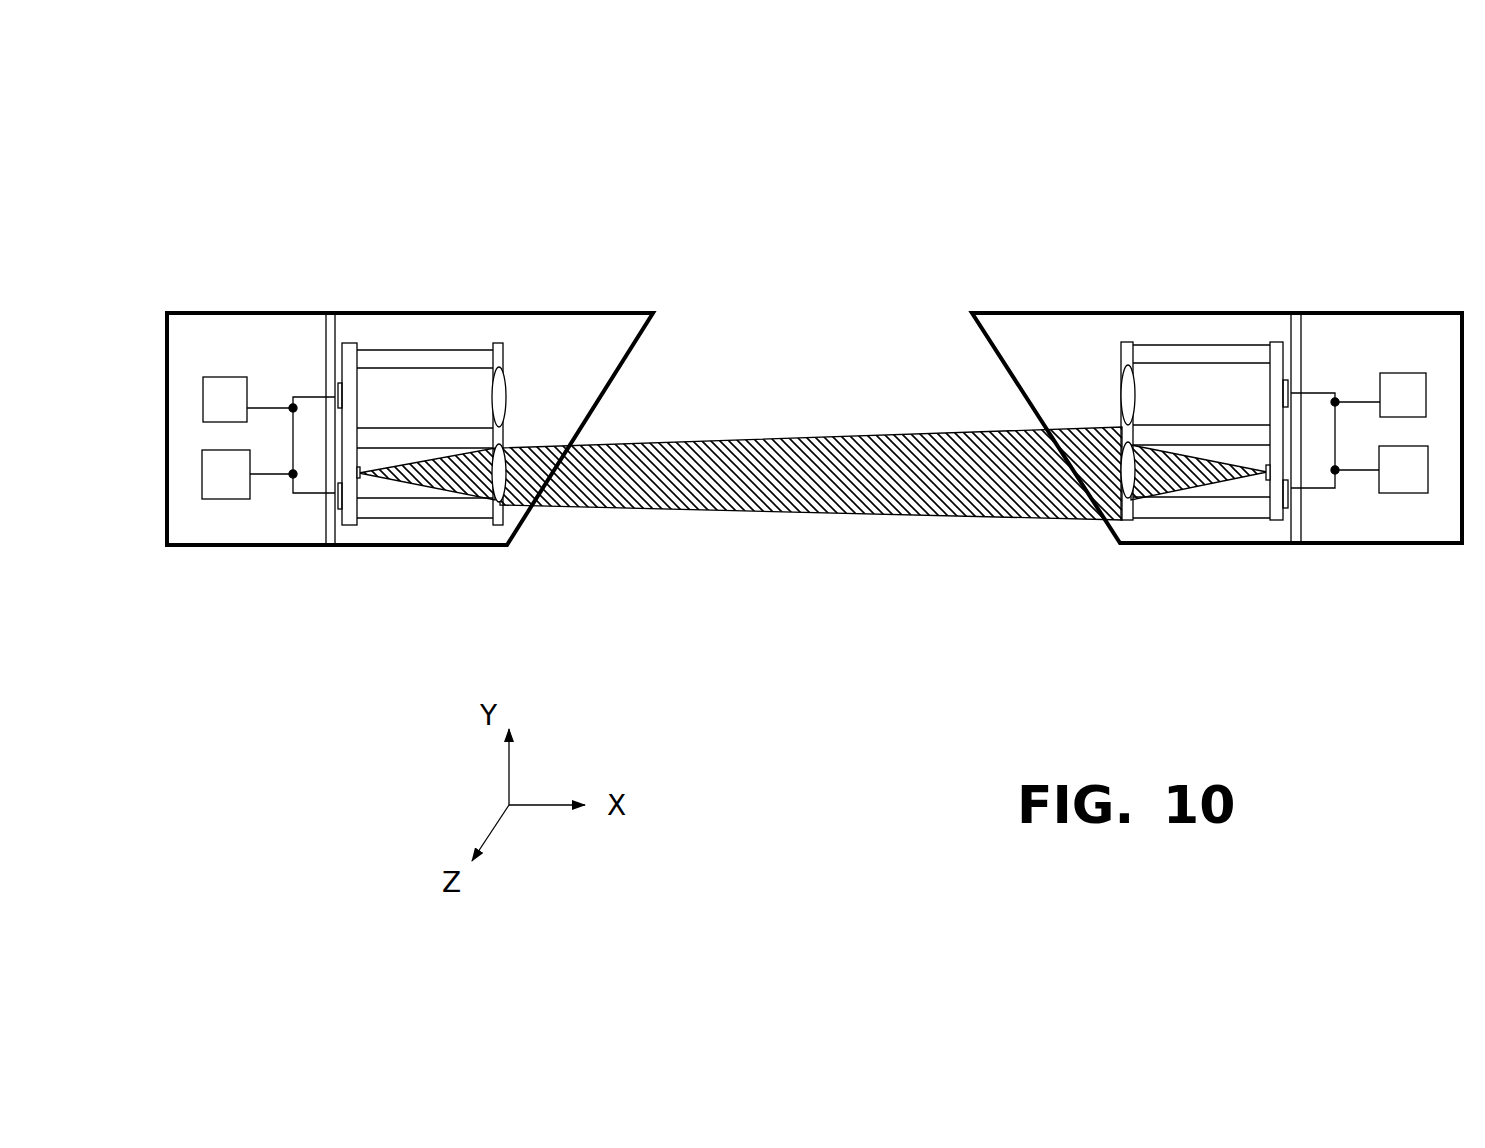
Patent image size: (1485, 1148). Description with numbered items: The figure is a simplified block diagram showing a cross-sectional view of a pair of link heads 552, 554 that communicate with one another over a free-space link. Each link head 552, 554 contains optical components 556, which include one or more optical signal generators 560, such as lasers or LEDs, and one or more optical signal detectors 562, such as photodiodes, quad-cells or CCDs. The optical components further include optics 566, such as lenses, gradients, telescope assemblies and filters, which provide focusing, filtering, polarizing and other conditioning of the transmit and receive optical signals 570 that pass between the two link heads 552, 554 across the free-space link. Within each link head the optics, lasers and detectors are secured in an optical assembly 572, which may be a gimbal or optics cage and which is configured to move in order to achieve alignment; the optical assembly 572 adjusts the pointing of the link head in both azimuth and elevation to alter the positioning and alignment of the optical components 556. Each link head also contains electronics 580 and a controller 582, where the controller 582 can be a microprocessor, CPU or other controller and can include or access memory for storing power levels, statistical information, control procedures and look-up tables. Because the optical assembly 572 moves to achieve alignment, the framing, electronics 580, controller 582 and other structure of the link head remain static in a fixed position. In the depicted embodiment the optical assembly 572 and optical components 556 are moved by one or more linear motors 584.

The link head 552 is at (595, 312).
The link head 554 is at (1020, 312).
The optical components 556 is at (812, 365).
The optical signal generator 560 is at (362, 478).
The optical signal detector 562 is at (1267, 472).
The optics 566 is at (514, 498).
The optical signals 570 is at (805, 514).
The optical assembly 572 is at (457, 350).
The electronics 580 is at (203, 400).
The controller 582 is at (202, 476).
The linear motor 584 is at (337, 394).